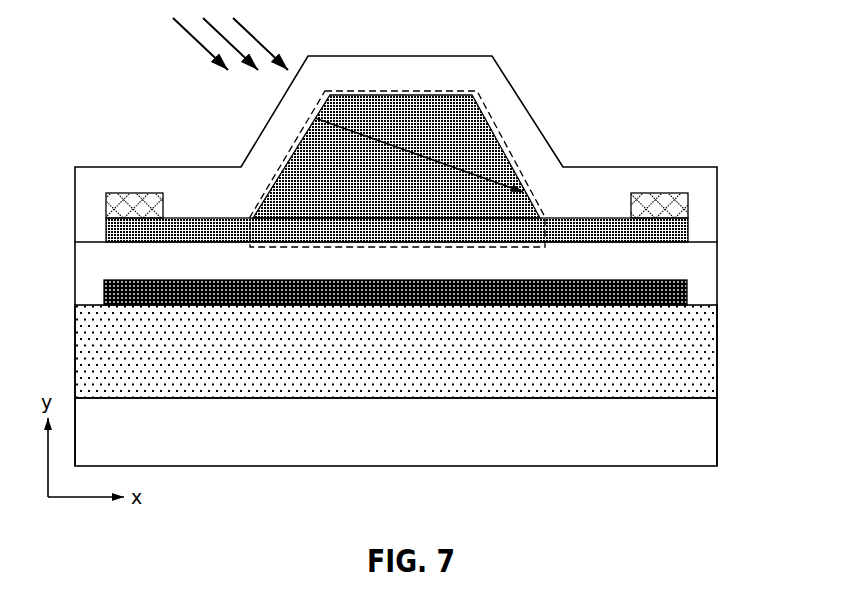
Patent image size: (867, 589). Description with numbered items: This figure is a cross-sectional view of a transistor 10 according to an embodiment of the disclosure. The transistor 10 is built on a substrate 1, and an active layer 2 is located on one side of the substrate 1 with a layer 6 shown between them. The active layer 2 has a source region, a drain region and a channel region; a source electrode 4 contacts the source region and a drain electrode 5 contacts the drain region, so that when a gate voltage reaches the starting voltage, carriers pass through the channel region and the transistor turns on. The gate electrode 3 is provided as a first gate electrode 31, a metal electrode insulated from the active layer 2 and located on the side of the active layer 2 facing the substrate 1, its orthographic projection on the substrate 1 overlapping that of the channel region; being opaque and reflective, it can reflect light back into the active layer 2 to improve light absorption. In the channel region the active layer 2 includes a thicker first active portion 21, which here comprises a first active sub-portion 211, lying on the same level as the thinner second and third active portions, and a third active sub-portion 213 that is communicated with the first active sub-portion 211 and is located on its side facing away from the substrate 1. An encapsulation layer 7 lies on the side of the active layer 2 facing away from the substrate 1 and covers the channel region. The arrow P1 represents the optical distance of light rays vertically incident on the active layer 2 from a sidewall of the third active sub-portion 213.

The transistor 10 is at (112, 14).
The substrate 1 is at (717, 428).
The buffer layer 6 is at (717, 350).
The gate electrode 3 is at (447, 292).
The first gate electrode 31 is at (687, 302).
The encapsulation layer 7 is at (717, 167).
The active layer 2 is at (688, 232).
The source electrode 4 is at (106, 212).
The drain electrode 5 is at (688, 205).
The first active portion 21 is at (473, 138).
The first active sub-portion 211 is at (437, 247).
The third active sub-portion 213 is at (437, 94).
The optical distance P1 is at (419, 155).